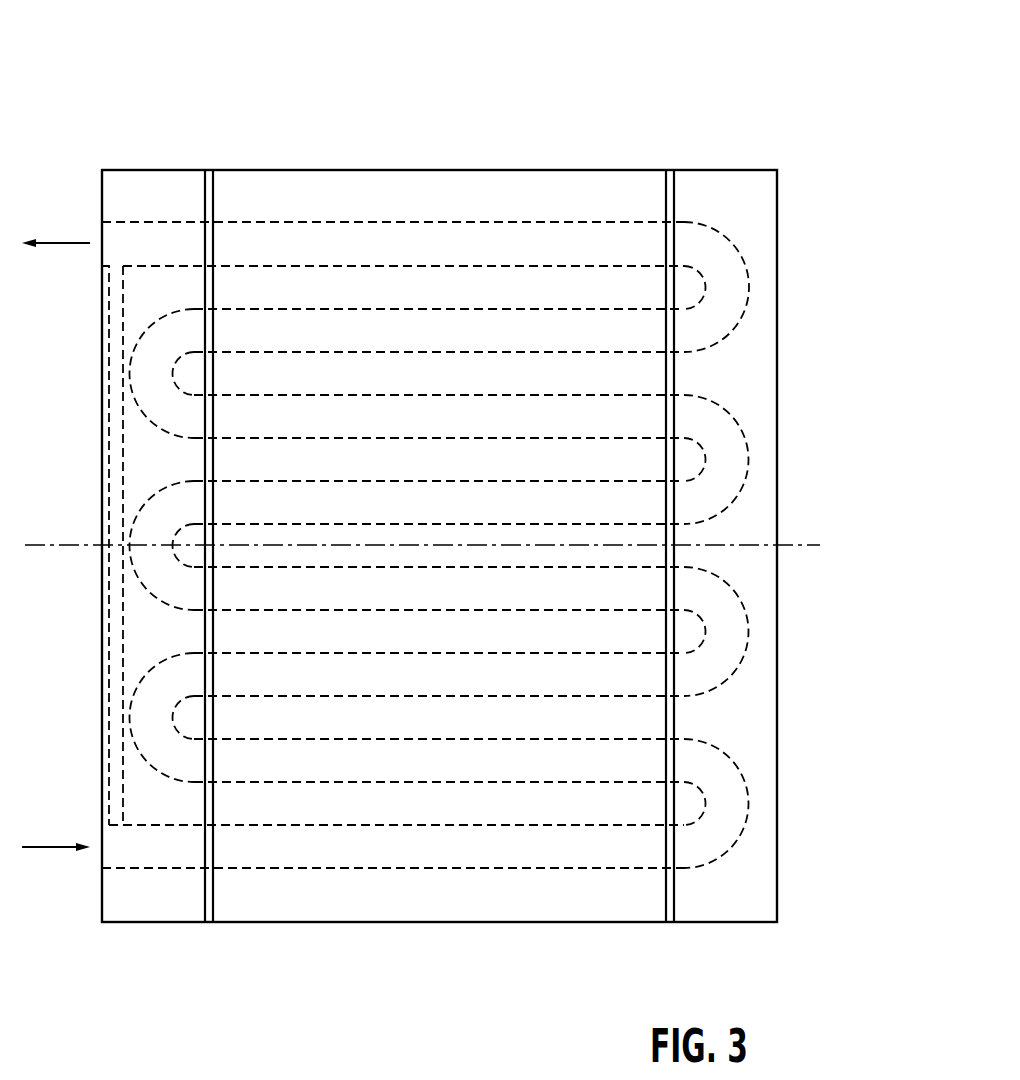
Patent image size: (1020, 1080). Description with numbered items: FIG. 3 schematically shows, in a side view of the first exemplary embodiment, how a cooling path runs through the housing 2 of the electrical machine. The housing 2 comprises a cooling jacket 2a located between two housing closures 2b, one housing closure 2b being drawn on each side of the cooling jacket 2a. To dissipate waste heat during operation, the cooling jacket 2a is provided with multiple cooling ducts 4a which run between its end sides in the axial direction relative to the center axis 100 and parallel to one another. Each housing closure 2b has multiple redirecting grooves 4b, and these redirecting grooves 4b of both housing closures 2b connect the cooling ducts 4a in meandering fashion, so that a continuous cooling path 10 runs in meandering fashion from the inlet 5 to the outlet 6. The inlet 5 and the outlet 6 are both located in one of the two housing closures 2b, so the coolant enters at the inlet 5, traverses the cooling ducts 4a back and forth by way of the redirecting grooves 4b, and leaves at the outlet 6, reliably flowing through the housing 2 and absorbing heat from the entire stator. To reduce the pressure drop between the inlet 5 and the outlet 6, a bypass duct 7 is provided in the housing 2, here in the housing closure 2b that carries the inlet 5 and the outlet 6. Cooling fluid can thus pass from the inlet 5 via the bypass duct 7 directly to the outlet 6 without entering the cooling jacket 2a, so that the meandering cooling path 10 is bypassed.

The housing 2 is at (115, 70).
The cooling jacket 2a is at (352, 195).
The housing closure 2b is at (153, 188).
The cooling duct 4a is at (452, 243).
The redirecting groove 4b is at (727, 286).
The inlet 5 is at (82, 866).
The outlet 6 is at (80, 224).
The bypass duct 7 is at (113, 634).
The cooling path 10 is at (618, 392).
The center axis 100 is at (68, 548).